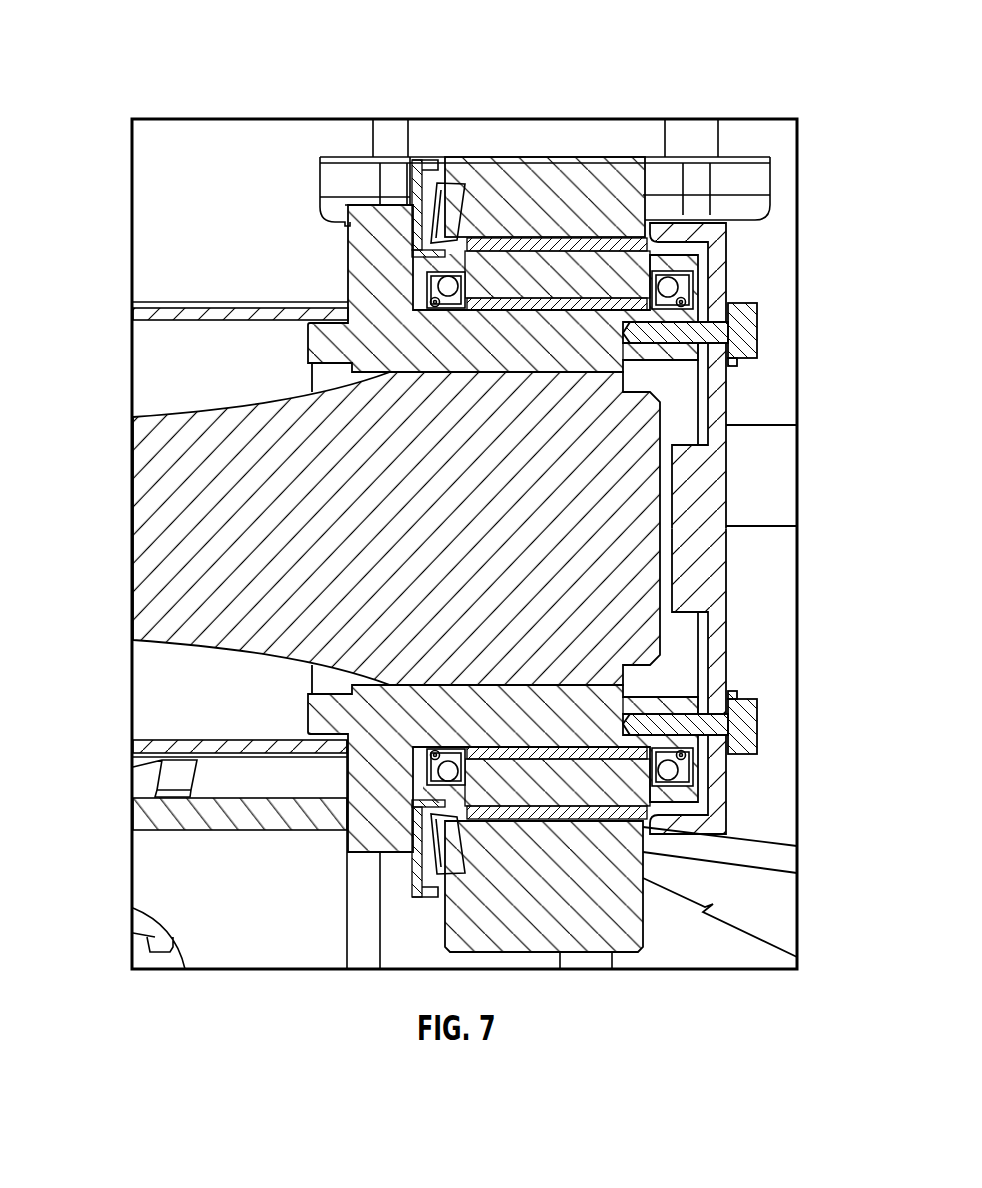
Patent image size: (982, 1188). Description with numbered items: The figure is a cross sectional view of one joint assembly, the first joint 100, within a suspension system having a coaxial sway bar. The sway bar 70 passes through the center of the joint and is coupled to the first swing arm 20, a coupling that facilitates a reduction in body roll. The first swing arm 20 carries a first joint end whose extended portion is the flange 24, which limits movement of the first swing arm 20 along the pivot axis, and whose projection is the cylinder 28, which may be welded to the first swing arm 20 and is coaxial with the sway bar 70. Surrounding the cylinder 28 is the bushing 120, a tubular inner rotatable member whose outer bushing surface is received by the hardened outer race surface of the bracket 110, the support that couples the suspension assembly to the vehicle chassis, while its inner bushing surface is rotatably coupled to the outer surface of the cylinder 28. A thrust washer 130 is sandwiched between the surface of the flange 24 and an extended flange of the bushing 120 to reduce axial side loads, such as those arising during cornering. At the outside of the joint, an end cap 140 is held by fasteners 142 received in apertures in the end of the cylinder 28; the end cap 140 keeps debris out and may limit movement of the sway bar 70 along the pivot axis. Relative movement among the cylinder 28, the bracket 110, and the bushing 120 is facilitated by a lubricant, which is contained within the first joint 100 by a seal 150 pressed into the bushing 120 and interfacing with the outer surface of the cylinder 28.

The first joint 100 is at (143, 71).
The sway bar 70 is at (162, 506).
The bracket 110 is at (743, 180).
The flange 24 is at (380, 240).
The bushing 120 is at (595, 274).
The seal 150 is at (448, 284).
The thrust washer 130 is at (420, 172).
The end cap 140 is at (705, 488).
The fasteners 142 is at (753, 340).
The cylinder 28 is at (633, 350).
The first swing arm 20 is at (777, 637).